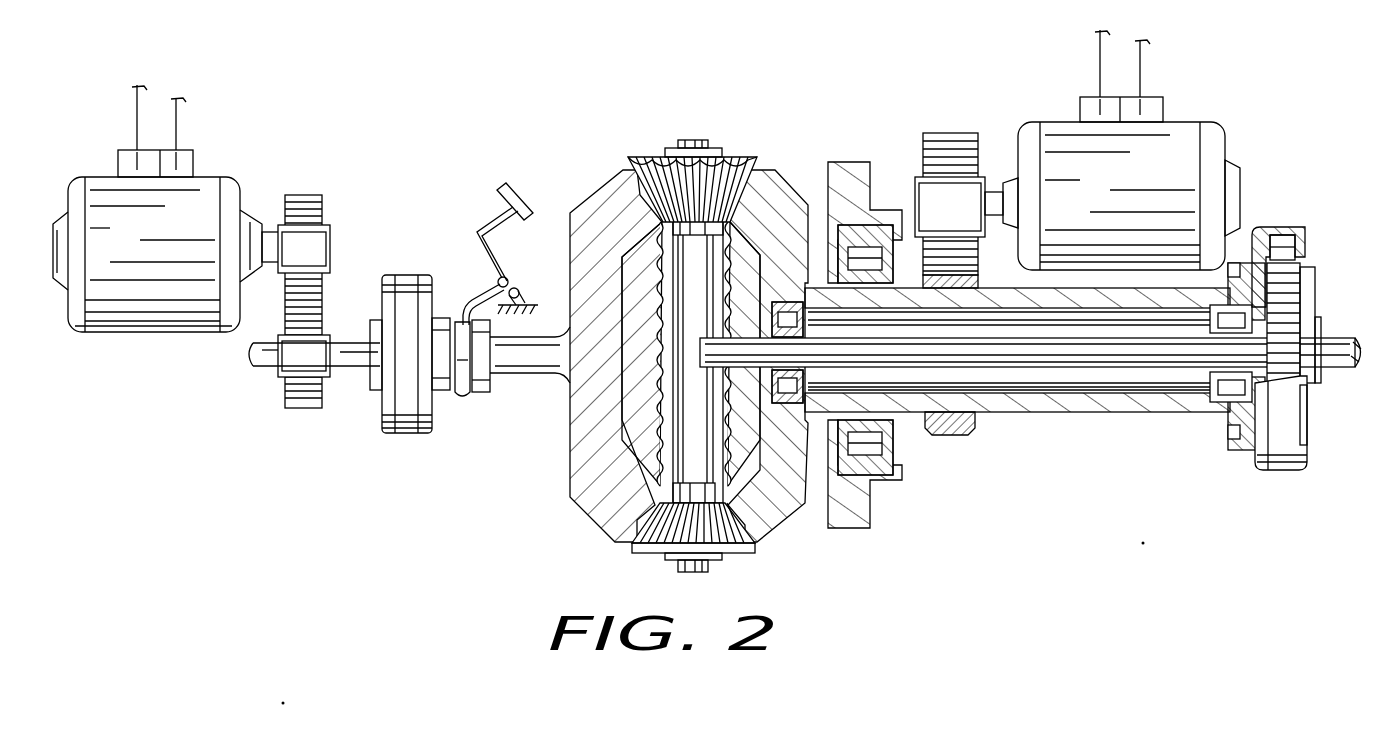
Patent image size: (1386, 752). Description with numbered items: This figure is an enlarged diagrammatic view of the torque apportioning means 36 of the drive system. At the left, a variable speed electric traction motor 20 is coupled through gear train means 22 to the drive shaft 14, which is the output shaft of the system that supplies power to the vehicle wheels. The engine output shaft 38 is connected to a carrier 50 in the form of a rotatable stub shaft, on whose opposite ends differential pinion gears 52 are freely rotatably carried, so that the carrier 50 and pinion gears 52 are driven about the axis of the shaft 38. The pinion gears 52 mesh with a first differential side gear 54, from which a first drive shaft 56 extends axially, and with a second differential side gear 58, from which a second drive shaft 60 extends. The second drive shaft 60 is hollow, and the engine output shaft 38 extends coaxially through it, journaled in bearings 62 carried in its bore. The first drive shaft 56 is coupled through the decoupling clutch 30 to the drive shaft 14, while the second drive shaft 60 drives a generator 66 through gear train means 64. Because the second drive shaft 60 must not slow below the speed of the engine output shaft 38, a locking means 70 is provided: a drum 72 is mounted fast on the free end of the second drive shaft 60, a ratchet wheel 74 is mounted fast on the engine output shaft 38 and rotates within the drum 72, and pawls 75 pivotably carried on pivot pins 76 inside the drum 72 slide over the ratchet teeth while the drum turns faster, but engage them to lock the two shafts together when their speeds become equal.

The drive shaft 14 is at (268, 372).
The variable speed electric traction motor 20 is at (228, 175).
The gear train means 22 is at (320, 195).
The decoupling clutch 30 is at (405, 437).
The torque apportioning means 36 is at (703, 128).
The engine output shaft 38 is at (1022, 345).
The carrier 50 is at (680, 398).
The differential pinion gears 52 is at (736, 155).
The first differential side gear 54 is at (600, 190).
The first drive shaft 56 is at (508, 380).
The second differential side gear 58 is at (775, 512).
The second drive shaft 60 is at (1085, 415).
The bearings 62 is at (812, 390).
The gear train means 64 is at (958, 135).
The generator 66 is at (1220, 125).
The locking means 70 is at (1275, 482).
The drum 72 is at (1290, 438).
The ratchet wheel 74 is at (1310, 300).
The pawls 75 is at (1288, 226).
The pivot pins 76 is at (1305, 243).